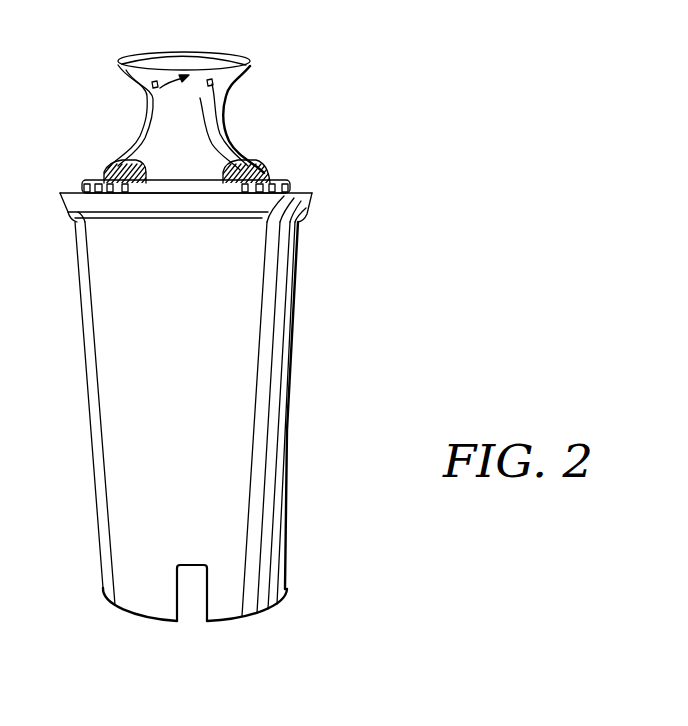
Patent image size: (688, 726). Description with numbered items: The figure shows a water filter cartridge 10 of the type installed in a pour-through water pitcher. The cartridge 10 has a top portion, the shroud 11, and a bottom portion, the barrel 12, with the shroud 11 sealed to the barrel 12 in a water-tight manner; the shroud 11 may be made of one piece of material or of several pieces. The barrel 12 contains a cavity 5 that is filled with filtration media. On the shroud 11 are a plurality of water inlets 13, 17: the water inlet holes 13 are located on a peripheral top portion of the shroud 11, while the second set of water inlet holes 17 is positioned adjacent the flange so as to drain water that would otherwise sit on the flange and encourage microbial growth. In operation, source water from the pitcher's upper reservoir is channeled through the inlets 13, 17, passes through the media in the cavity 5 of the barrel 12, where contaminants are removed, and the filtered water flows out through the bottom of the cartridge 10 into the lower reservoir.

The cavity 5 is at (137, 468).
The water filter cartridge 10 is at (283, 509).
The shroud 11 is at (150, 90).
The barrel 12 is at (218, 598).
The water inlet holes 13 is at (267, 169).
The second set of water inlet holes 17 is at (290, 188).